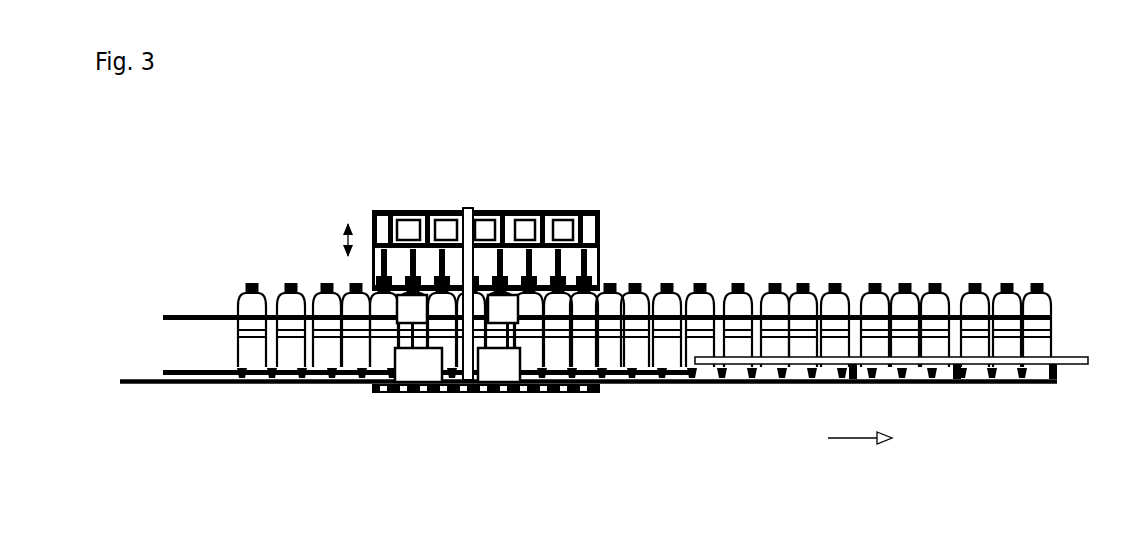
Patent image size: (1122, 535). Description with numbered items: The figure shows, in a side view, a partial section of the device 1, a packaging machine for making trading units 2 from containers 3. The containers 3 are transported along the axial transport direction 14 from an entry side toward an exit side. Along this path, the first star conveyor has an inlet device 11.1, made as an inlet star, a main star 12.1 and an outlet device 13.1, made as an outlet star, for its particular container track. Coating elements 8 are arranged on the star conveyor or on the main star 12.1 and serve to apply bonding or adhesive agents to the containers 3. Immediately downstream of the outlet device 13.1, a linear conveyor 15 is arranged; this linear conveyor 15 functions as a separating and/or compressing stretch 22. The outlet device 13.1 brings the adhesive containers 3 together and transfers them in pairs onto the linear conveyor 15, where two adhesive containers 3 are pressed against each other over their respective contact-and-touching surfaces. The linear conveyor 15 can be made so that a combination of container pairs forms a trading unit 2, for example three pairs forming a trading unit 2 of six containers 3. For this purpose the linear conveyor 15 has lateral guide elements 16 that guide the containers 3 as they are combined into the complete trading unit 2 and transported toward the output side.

The device 1 is at (640, 153).
The trading unit 2 is at (1007, 280).
The container 3 is at (242, 287).
The coating element 8 is at (497, 322).
The inlet device 11.1 is at (212, 365).
The main star 12.1 is at (490, 203).
The outlet device 13.1 is at (688, 310).
The axial transport direction 14 is at (860, 428).
The linear conveyor 15 is at (757, 382).
The lateral guide element 16 is at (1077, 364).
The separating and/or compressing stretch 22 is at (827, 222).